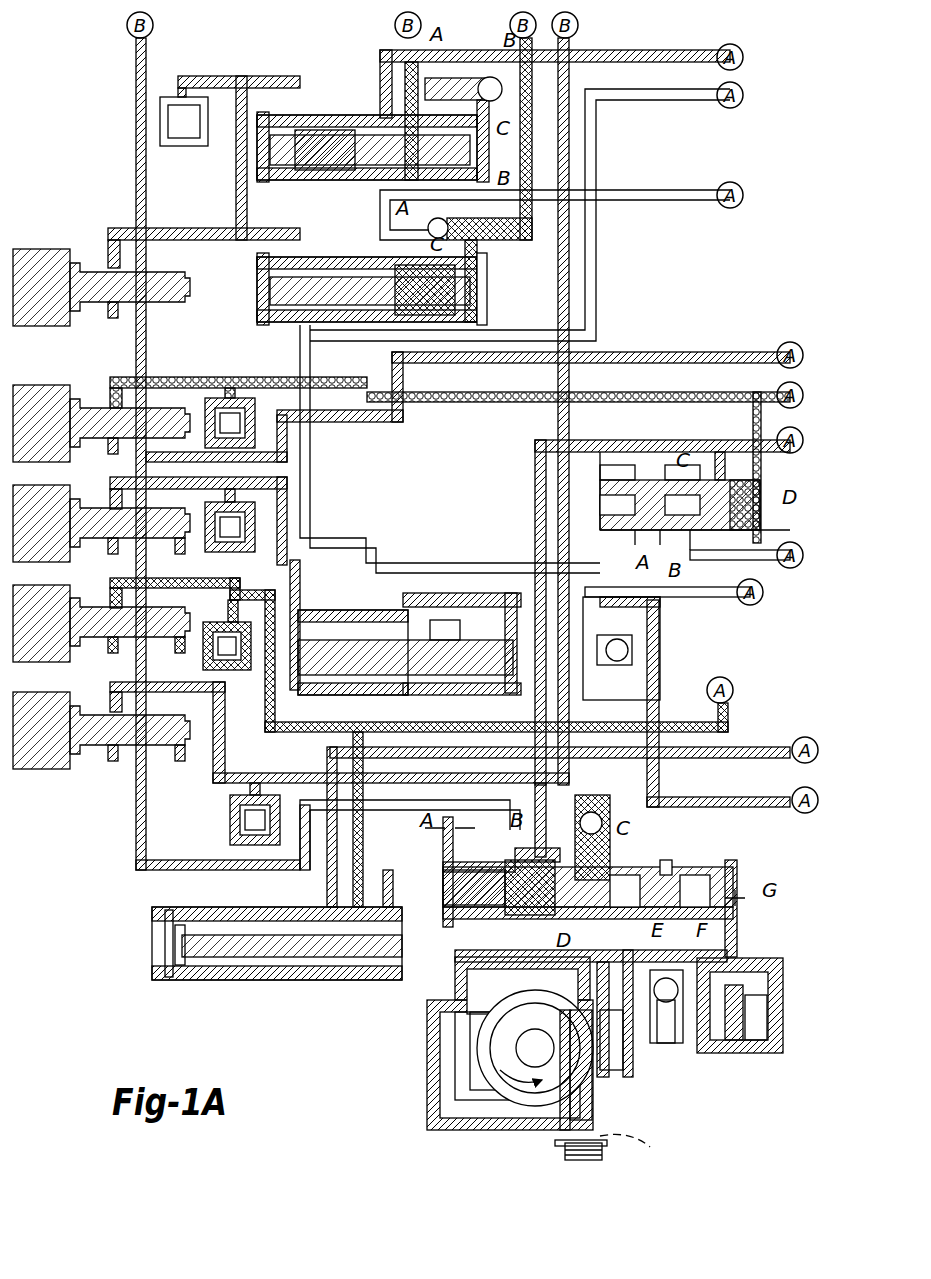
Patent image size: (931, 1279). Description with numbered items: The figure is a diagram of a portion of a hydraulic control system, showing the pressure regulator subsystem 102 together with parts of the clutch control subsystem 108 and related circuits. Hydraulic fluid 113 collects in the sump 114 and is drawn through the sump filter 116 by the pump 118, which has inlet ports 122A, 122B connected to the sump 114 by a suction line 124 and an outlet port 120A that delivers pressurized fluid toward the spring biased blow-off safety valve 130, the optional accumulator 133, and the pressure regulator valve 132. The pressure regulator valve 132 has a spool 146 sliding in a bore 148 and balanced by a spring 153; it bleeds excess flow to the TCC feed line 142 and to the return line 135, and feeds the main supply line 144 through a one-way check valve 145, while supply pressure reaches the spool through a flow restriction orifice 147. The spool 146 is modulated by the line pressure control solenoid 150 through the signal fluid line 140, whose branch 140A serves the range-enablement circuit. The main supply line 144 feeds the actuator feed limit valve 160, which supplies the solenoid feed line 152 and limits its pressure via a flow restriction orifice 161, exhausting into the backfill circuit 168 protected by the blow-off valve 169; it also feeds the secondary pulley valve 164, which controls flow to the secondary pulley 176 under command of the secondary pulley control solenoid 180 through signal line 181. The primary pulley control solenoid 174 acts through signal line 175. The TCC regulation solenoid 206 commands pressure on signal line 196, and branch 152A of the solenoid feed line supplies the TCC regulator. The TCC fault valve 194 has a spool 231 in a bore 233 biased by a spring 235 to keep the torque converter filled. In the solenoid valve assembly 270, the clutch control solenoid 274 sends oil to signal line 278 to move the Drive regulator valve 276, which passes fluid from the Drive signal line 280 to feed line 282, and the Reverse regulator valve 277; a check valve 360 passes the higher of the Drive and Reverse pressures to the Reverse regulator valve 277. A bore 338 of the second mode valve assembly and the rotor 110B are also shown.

The solenoid valve assembly 270 is at (100, 68).
The clutch control subsystem 108 is at (125, 132).
The solenoid feed line 152 is at (150, 60).
The clutch control solenoid 274 is at (55, 248).
The Reverse regulator valve 277 is at (325, 112).
The check valve 360 is at (488, 78).
The signal line 278 is at (196, 228).
The TCC regulation solenoid 206 is at (55, 385).
The secondary pulley control solenoid 180 is at (58, 485).
The signal line 181 is at (300, 505).
The primary pulley control solenoid 174 is at (55, 590).
The line pressure control solenoid 150 is at (55, 768).
The actuator feed limit valve 160 is at (195, 945).
The flow restriction orifice 161 is at (300, 862).
The signal fluid line 140 is at (225, 745).
The secondary pulley valve 164 is at (345, 640).
The exhaust backfill circuit 168 is at (437, 568).
The branch of the solenoid supply line 152A is at (375, 425).
The signal line 196 is at (432, 365).
The TCC feed line 142 is at (535, 512).
The bore 233 is at (610, 493).
The spring 235 is at (620, 480).
The spool 231 is at (735, 522).
The TCC fault valve 194 is at (778, 498).
The blow-off valve 169 is at (605, 640).
The signal line 175 is at (697, 720).
The main supply line 144 is at (778, 747).
The one-way check valve 145 is at (610, 823).
The spool 146 is at (705, 880).
The flow restriction orifice 147 is at (740, 898).
The pressure regulator valve 132 is at (435, 890).
The spring 153 is at (470, 900).
The inlet port 122B is at (478, 1003).
The bore 148 is at (555, 905).
The secondary pulley 176 is at (600, 965).
The outlet port 120A is at (680, 1020).
The return line 135 is at (625, 1040).
The inlet port 122A is at (590, 1085).
The suction line 124 is at (600, 1112).
The hydraulic fluid 113 is at (648, 1147).
The sump 114 is at (600, 1155).
The sump filter 116 is at (570, 1148).
The pump 118 is at (505, 1130).
The pump rotor 110B is at (480, 1040).
The pressure regulator subsystem 102 is at (330, 1047).
The spring biased blow-off safety valve 130 is at (770, 990).
The accumulator 133 is at (765, 1053).
The bore 338 is at (473, 255).
The Drive regulator valve 276 is at (488, 285).
The Drive signal line 280 is at (512, 332).
The feed line 282 is at (668, 190).
The branch of the signal line 140A is at (590, 352).